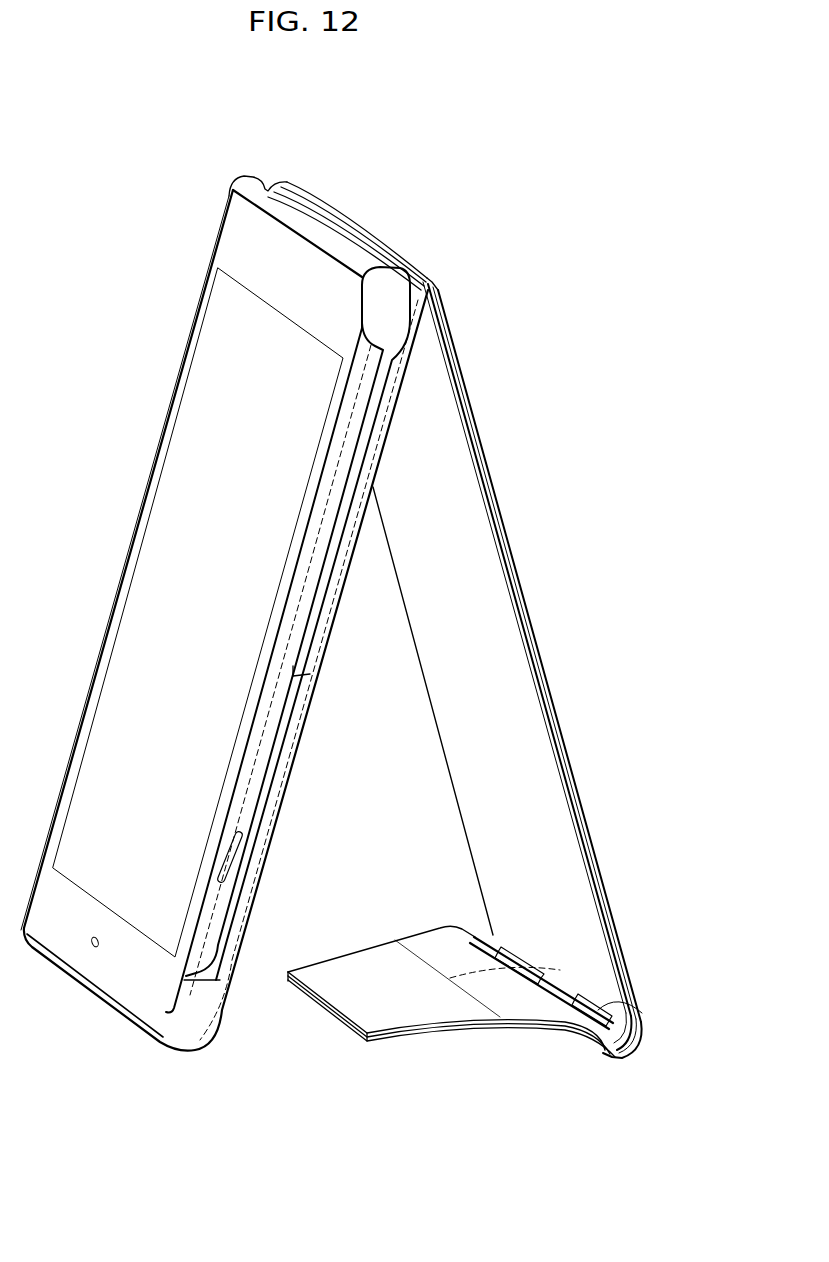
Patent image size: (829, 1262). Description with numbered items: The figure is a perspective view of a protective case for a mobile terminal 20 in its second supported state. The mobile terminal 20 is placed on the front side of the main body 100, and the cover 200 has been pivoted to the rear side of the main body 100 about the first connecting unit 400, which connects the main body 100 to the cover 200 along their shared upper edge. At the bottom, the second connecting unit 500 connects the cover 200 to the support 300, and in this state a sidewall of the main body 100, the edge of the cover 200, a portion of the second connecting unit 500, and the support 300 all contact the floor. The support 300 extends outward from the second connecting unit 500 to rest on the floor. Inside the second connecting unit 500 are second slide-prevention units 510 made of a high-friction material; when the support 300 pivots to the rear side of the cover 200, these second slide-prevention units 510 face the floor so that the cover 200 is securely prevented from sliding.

The mobile terminal 20 is at (127, 985).
The main body 100 is at (305, 732).
The cover 200 is at (463, 522).
The support 300 is at (360, 990).
The first connecting unit 400 is at (313, 204).
The second connecting unit 500 is at (632, 1053).
The second slide-prevention units 510 is at (630, 1010).